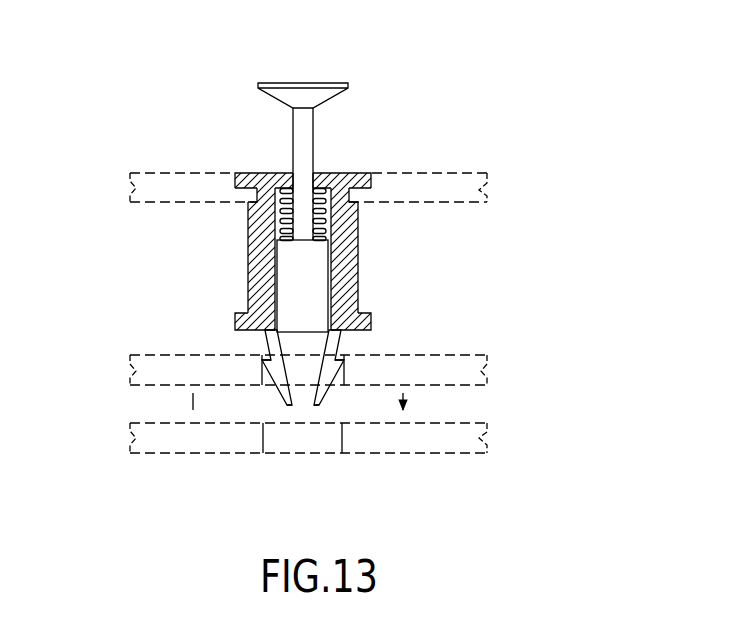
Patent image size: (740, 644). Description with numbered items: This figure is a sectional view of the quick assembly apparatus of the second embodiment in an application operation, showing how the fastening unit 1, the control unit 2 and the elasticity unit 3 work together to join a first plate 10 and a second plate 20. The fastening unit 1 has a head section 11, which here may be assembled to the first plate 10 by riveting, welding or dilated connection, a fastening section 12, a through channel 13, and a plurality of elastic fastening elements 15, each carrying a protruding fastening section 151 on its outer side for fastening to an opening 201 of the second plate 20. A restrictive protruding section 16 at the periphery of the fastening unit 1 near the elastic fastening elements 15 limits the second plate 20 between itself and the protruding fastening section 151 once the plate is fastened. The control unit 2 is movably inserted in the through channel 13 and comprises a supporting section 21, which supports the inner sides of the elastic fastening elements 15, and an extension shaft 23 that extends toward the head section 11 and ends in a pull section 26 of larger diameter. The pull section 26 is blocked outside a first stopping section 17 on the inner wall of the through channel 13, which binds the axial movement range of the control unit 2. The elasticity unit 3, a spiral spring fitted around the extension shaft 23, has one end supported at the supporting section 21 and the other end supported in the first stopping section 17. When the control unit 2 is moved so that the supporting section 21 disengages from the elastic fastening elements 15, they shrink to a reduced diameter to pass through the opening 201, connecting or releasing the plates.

The fastening unit 1 is at (261, 262).
The control unit 2 is at (348, 123).
The elasticity unit 3 is at (338, 212).
The first plate 10 is at (489, 191).
The head section 11 is at (234, 178).
The fastening section 12 is at (292, 410).
The through channel 13 is at (277, 217).
The elastic fastening elements 15 is at (260, 370).
The restrictive protruding section 16 is at (235, 317).
The first stopping section 17 is at (283, 175).
The second plate 20 is at (357, 458).
The supporting section 21 is at (305, 290).
The extension shaft 23 is at (306, 156).
The pull section 26 is at (298, 92).
The protruding fastening section 151 is at (262, 372).
The opening of second plate 201 is at (343, 437).